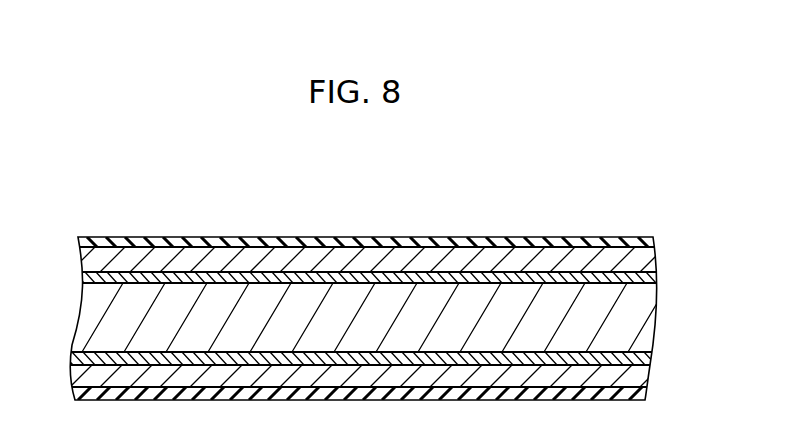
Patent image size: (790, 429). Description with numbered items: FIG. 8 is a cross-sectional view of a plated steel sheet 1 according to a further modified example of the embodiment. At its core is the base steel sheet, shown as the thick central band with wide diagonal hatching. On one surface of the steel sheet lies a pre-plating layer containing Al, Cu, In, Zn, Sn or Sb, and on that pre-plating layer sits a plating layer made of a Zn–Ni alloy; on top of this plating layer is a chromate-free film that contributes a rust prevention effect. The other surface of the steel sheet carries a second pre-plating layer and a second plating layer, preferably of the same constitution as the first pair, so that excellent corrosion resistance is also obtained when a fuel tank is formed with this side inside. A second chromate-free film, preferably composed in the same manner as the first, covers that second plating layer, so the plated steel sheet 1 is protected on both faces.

The plated steel sheet 1 is at (594, 187).